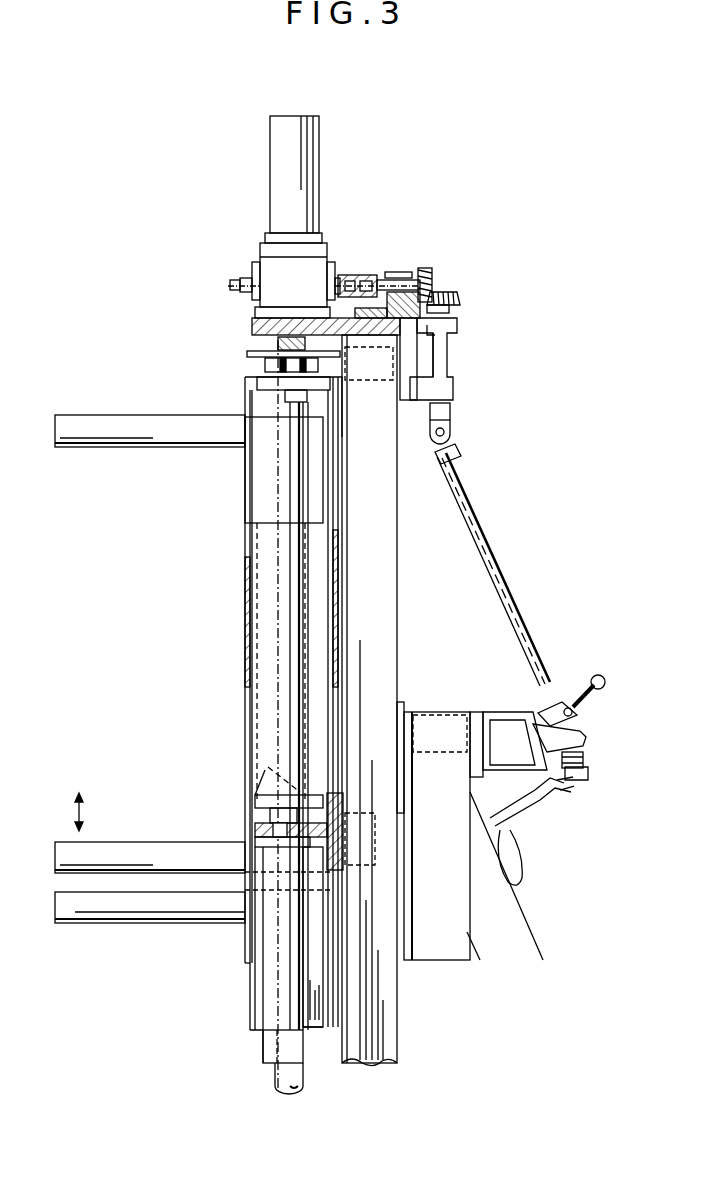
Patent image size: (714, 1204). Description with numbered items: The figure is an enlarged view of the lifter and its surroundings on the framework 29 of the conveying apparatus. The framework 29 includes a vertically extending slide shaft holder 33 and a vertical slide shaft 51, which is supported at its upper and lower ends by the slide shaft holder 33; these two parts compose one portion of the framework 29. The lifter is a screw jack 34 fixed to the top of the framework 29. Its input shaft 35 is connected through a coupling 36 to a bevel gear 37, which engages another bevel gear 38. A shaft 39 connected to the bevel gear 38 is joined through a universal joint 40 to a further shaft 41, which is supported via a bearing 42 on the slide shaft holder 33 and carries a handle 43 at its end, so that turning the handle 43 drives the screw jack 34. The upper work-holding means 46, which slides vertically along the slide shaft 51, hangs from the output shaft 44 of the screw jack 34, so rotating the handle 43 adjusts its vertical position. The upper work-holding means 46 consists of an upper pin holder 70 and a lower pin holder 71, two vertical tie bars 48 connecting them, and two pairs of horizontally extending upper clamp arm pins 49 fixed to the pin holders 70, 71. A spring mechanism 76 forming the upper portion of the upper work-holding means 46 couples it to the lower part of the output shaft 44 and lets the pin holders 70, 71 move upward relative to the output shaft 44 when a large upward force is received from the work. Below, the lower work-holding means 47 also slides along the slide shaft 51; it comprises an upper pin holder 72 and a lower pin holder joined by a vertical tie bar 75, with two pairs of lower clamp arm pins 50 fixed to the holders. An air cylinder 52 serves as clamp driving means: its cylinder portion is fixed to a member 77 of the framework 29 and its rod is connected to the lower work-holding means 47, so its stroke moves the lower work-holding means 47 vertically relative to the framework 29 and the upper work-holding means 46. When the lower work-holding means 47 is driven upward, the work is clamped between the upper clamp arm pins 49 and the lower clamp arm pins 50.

The framework 29 is at (442, 948).
The slide shaft holder 33 is at (374, 544).
The screw jack 34 is at (319, 142).
The input shaft 35 is at (337, 278).
The coupling 36 is at (366, 278).
The bevel gear 37 is at (424, 270).
The bevel gear 38 is at (450, 298).
The shaft 39 is at (443, 360).
The universal joint 40 is at (448, 429).
The shaft 41 is at (508, 585).
The bearing 42 is at (582, 738).
The handle 43 is at (543, 806).
The output shaft 44 is at (275, 343).
The upper work-holding means 46 is at (239, 504).
The lower work-holding means 47 is at (268, 792).
The tie bar 48 is at (342, 522).
The upper clamp arm pin 49 is at (115, 424).
The lower clamp arm pin 50 is at (145, 855).
The slide shaft 51 is at (285, 665).
The air cylinder 52 is at (267, 1048).
The upper pin holder 70 is at (271, 465).
The lower pin holder 71 is at (245, 950).
The upper pin holder 72 is at (247, 810).
The tie bar 75 is at (317, 993).
The spring mechanism 76 is at (265, 368).
The member 77 is at (257, 828).